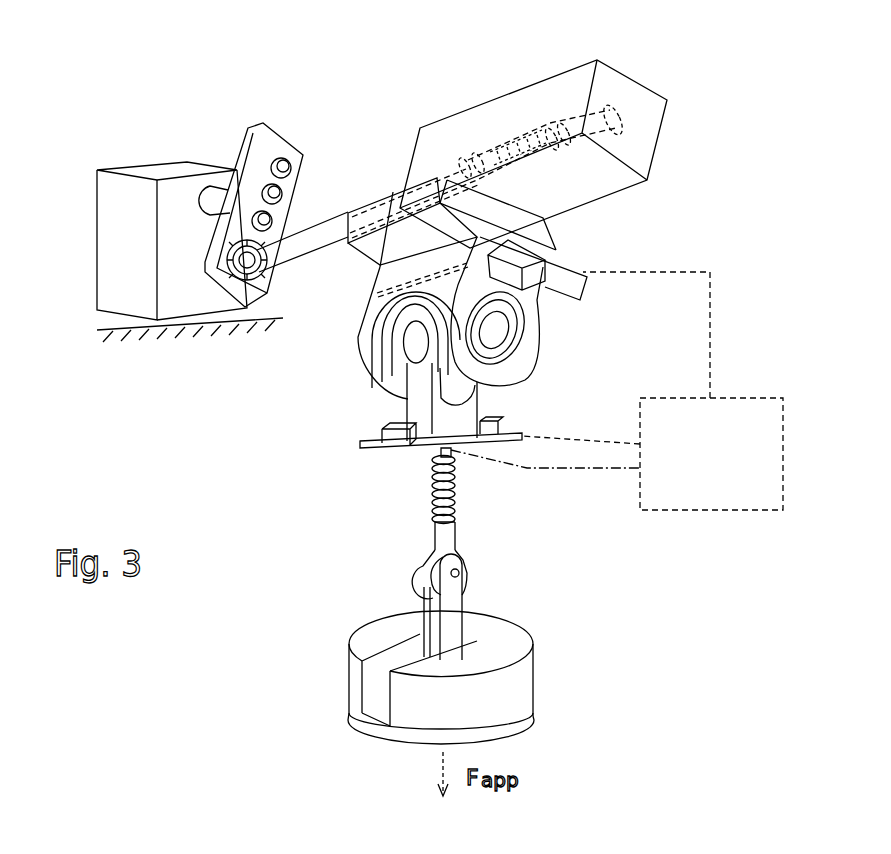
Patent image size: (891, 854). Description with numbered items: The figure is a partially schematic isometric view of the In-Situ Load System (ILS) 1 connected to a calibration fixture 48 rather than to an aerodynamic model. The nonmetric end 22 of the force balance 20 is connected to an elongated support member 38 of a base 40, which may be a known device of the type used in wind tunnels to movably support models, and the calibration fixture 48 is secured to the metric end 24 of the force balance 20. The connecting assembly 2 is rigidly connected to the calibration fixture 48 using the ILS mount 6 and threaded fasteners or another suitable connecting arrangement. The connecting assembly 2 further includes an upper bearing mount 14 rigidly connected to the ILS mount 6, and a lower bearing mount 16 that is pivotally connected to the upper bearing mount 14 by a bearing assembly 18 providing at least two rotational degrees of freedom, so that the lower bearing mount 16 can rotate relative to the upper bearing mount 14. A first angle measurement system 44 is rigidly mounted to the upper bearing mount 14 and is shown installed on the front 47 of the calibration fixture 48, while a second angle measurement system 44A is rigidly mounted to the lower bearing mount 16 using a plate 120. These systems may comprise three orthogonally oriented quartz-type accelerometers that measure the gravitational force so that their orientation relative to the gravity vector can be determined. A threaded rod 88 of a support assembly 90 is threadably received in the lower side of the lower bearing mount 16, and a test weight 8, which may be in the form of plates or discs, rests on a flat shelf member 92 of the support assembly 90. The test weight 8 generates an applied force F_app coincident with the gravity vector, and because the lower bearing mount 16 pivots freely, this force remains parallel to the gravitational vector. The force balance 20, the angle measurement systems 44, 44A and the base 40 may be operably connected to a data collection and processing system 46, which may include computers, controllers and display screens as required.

The In-Situ Load System (ILS) 1 is at (566, 338).
The connecting assembly 2 is at (355, 358).
The ILS mount 6 is at (582, 273).
The test weight 8 is at (370, 622).
The upper bearing mount 14 is at (382, 270).
The lower bearing mount 16 is at (403, 404).
The bearing assembly 18 is at (505, 340).
The force balance 20 is at (445, 172).
The nonmetric end 22 is at (430, 197).
The metric end 24 is at (605, 137).
The elongated support member 38 is at (388, 192).
The base 40 is at (156, 152).
The first angle measurement system 44 is at (555, 250).
The second angle measurement system 44A is at (487, 420).
The data collection and processing system 46 is at (785, 450).
The front 47 is at (640, 163).
The calibration fixture 48 is at (549, 70).
The threaded rod 88 is at (460, 488).
The support assembly 90 is at (466, 562).
The flat shelf member 92 is at (530, 715).
The plate 120 is at (400, 448).